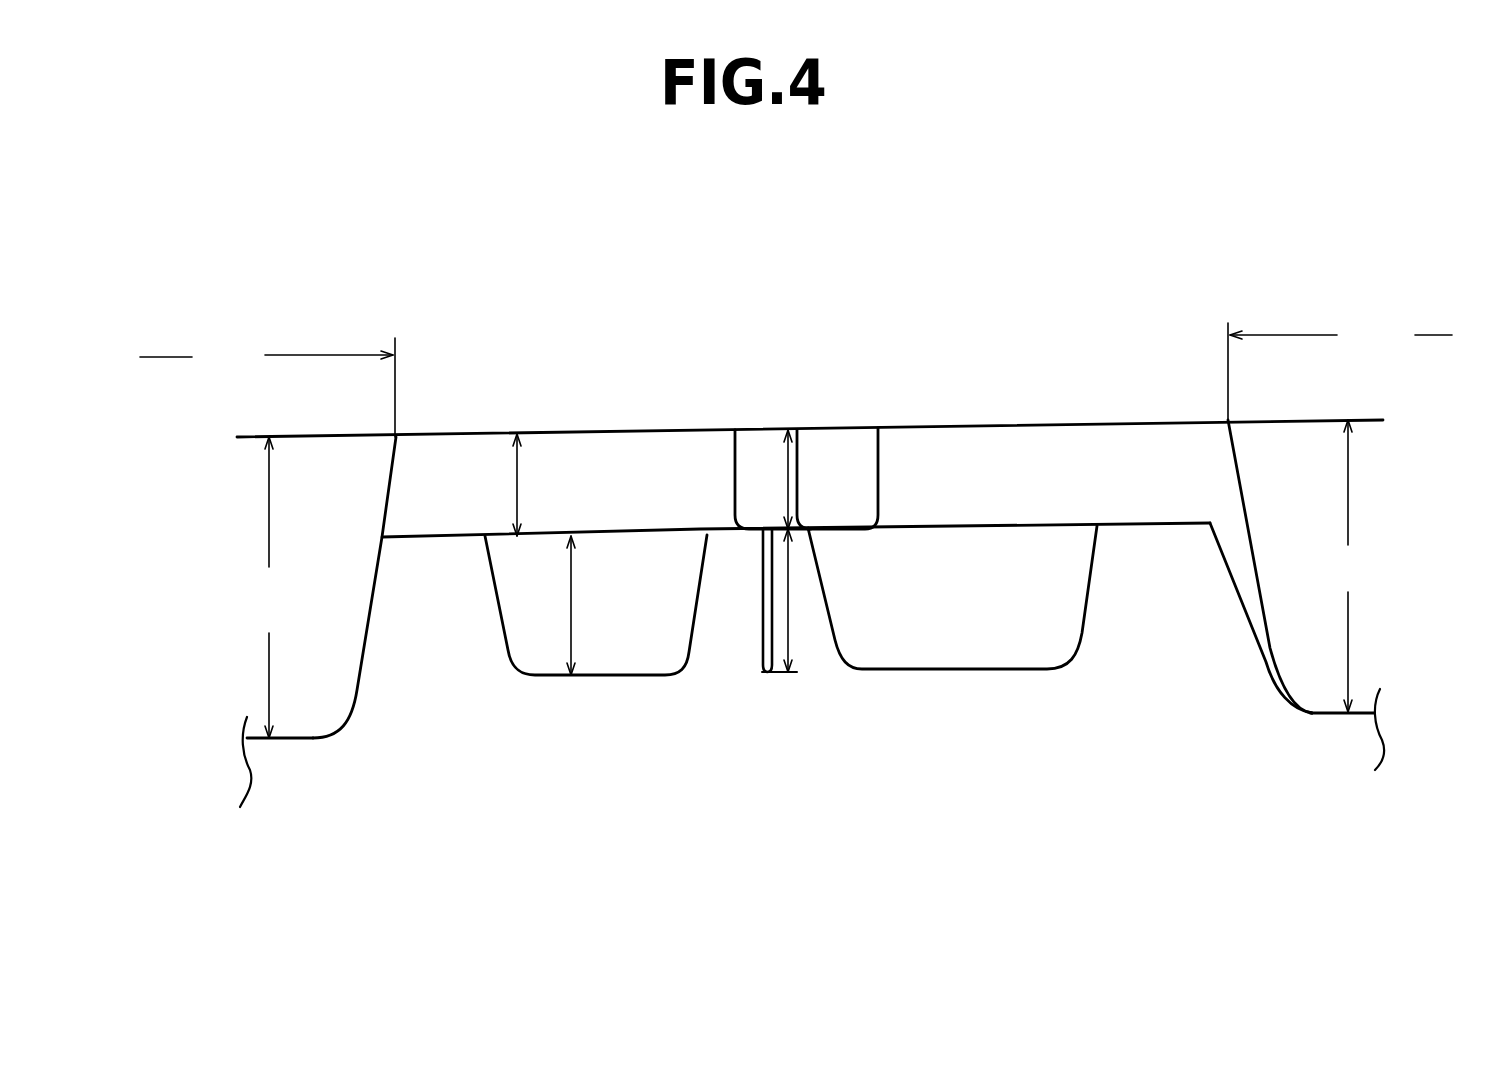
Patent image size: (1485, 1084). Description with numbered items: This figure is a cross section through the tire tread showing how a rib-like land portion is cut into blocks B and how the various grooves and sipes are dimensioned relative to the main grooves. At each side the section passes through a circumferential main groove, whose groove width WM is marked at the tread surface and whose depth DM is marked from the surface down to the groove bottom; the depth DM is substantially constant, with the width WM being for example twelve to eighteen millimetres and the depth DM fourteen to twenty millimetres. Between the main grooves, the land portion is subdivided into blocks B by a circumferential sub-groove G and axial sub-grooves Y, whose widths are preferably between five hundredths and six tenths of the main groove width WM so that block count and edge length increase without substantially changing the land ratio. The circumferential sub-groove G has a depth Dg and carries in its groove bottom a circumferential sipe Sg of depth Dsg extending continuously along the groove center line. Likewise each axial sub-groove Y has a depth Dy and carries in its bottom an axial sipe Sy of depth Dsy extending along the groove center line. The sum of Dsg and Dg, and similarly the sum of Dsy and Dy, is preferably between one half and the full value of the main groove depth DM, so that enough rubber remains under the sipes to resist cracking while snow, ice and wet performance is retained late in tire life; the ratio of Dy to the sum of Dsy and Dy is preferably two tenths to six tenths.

The blocks B is at (460, 433).
The axial sub-groove Y is at (1118, 524).
The circumferential sub-groove G is at (737, 477).
The circumferential sipe Sg is at (763, 627).
The axial sipes Sy is at (665, 675).
The depth of the axial sub-groove Dy is at (518, 480).
The depth of the axial sipe Dsy is at (572, 610).
The depth of the circumferential sub-groove Dg is at (785, 478).
The depth of the circumferential sipe Dsg is at (788, 620).
The groove width of the main groove WM is at (796, 378).
The depth of the main groove DM is at (813, 579).